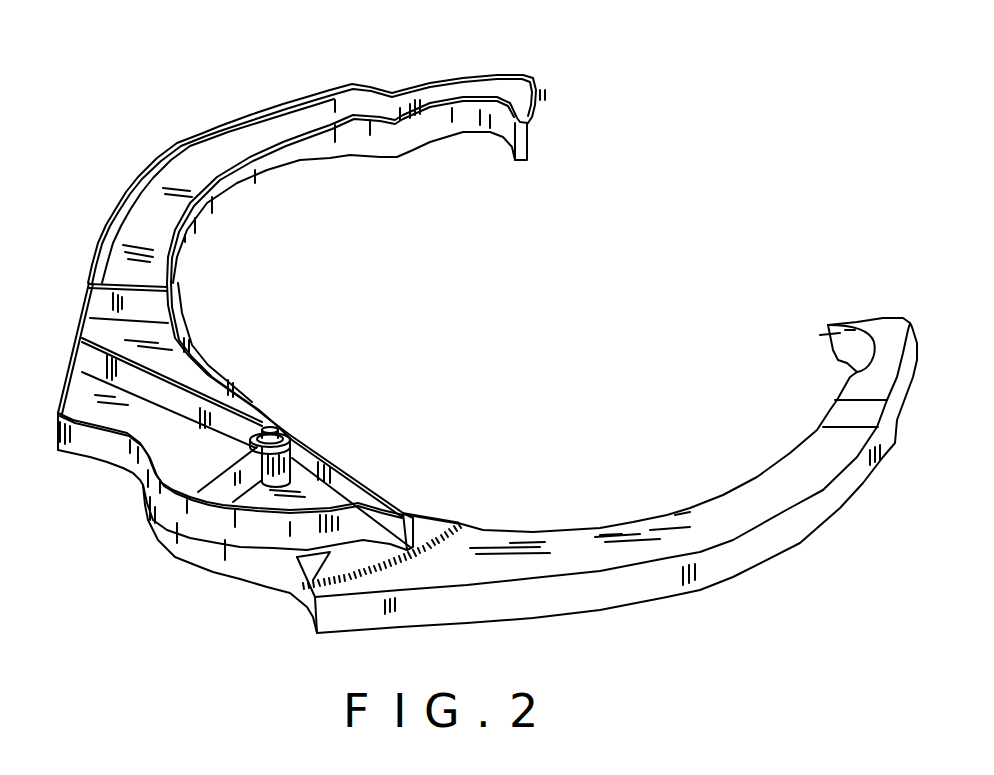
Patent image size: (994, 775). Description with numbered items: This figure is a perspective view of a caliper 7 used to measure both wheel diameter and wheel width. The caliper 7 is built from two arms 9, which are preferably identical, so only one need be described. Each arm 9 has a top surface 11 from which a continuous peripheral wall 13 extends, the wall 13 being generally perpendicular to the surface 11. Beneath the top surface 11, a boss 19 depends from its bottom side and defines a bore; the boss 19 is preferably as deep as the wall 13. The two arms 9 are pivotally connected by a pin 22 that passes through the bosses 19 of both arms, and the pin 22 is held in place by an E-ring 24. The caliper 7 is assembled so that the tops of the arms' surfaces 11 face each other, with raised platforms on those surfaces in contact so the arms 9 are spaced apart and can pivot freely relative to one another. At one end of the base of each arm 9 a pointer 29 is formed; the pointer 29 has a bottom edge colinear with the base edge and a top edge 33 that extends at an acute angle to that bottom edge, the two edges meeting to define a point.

The caliper 7 is at (407, 76).
The arm 9 is at (545, 73).
The top surface 11 is at (556, 549).
The continuous peripheral wall 13 is at (316, 154).
The boss 19 is at (282, 460).
The pin 22 is at (283, 428).
The E-ring 24 is at (292, 436).
The pointer 29 is at (396, 505).
The top edge 33 is at (368, 522).